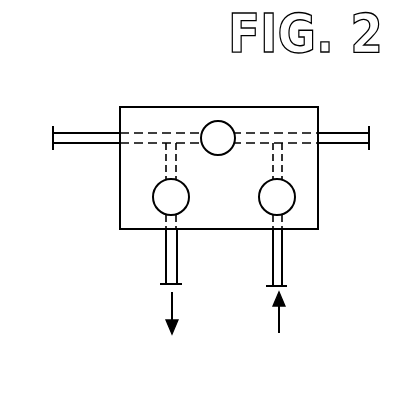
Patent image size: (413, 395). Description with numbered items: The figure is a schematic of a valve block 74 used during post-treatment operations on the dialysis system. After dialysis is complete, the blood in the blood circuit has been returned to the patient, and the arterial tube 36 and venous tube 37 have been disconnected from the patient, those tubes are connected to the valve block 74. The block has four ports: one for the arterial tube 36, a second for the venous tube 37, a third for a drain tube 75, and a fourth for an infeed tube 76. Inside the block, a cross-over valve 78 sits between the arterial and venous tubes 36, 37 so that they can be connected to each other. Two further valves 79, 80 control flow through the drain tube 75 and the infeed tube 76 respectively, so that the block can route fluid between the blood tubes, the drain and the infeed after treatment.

The arterial tube 36 is at (85, 132).
The venous tube 37 is at (350, 132).
The valve block 74 is at (108, 178).
The drain tube 75 is at (165, 258).
The infeed tube 76 is at (283, 253).
The cross-over valve 78 is at (211, 121).
The drain tube valve 79 is at (153, 204).
The infeed tube valve 80 is at (296, 197).